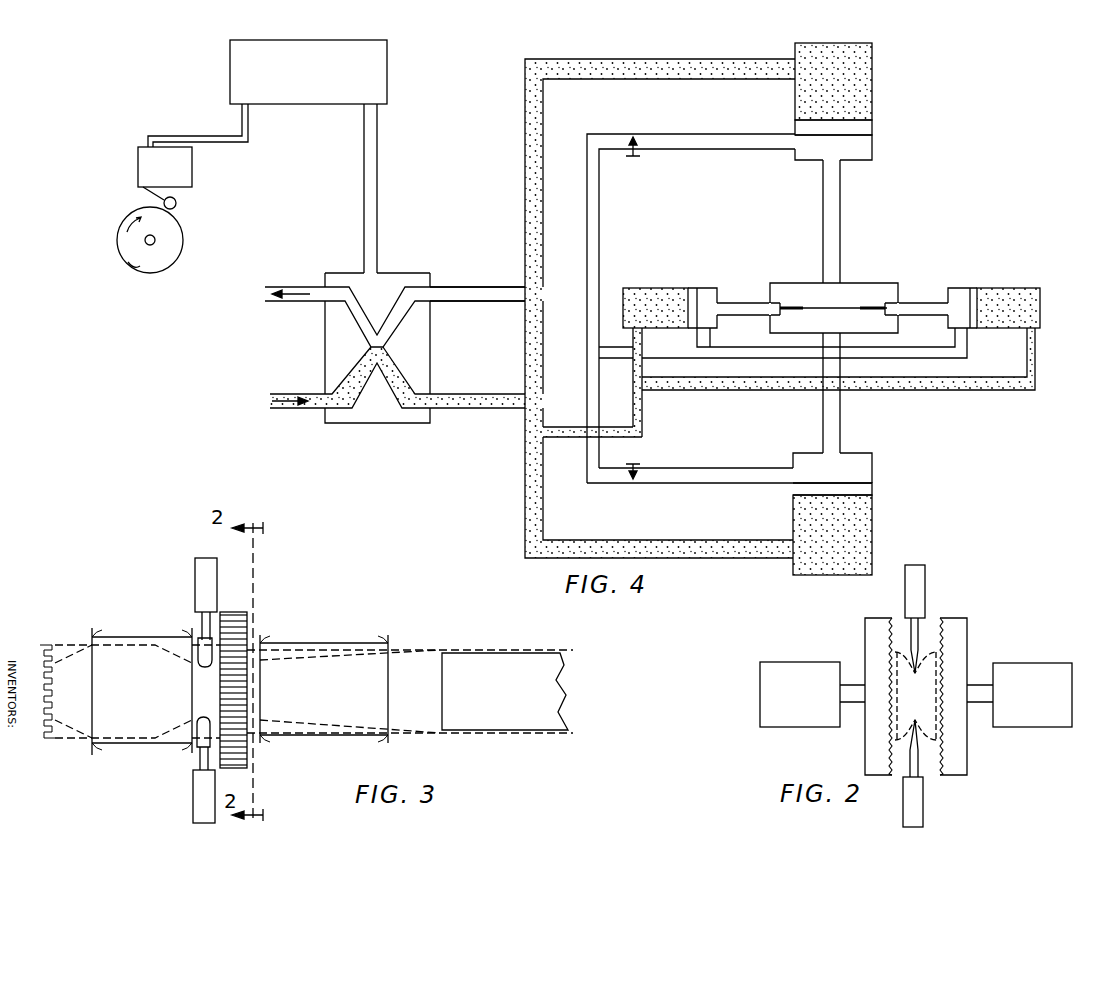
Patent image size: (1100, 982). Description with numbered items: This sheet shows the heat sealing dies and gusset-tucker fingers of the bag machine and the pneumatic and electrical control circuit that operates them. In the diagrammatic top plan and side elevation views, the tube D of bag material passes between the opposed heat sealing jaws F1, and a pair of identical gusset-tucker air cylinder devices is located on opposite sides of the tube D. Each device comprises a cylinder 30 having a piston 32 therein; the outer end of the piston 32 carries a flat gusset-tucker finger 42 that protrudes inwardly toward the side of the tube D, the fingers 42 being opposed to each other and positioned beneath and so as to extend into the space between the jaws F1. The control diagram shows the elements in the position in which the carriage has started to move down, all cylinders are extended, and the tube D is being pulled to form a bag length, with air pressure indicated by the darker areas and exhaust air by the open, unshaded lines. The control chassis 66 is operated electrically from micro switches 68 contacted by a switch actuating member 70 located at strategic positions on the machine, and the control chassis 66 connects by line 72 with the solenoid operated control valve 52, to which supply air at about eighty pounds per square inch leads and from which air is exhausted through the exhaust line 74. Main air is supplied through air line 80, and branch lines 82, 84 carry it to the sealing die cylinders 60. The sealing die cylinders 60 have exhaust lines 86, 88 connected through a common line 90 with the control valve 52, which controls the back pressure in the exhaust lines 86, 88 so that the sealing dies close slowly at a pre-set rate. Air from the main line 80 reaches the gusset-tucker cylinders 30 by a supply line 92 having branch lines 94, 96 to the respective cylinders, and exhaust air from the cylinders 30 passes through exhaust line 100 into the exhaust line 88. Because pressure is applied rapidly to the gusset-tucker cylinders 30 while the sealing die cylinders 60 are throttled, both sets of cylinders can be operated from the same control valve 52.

In FIG. 4, the gusset-tucker cylinder 30 is at (663, 290).
In FIG. 3, the gusset-tucker cylinder 30 is at (195, 586).
In FIG. 2, the gusset-tucker cylinder 30 is at (918, 579).
In FIG. 4, the piston 32 is at (736, 300).
In FIG. 3, the piston 32 is at (198, 634).
In FIG. 2, the piston 32 is at (918, 631).
In FIG. 4, the gusset-tucker finger 42 is at (800, 296).
In FIG. 4, the solenoid operated control valve 52 is at (418, 331).
In FIG. 4, the sealing die cylinder 60 is at (845, 103).
In FIG. 2, the sealing die cylinder 60 is at (772, 712).
In FIG. 4, the control chassis 66 is at (388, 72).
In FIG. 4, the micro switch 68 is at (192, 175).
In FIG. 4, the switch actuating member 70 is at (170, 245).
In FIG. 4, the line 72 is at (377, 170).
In FIG. 4, the exhaust line 74 is at (313, 297).
In FIG. 4, the air line 80 is at (437, 393).
In FIG. 4, the branch line 82 is at (525, 163).
In FIG. 4, the branch line 84 is at (525, 498).
In FIG. 4, the exhaust line 86 is at (723, 141).
In FIG. 4, the exhaust line 88 is at (706, 443).
In FIG. 4, the common line 90 is at (490, 262).
In FIG. 4, the supply line 92 is at (578, 401).
In FIG. 4, the branch line 94 is at (642, 373).
In FIG. 4, the branch line 96 is at (636, 416).
In FIG. 4, the exhaust line 100 is at (756, 331).
In FIG. 4, the heat sealing jaws F1 is at (848, 290).
In FIG. 3, the heat sealing jaws F1 is at (247, 629).
In FIG. 2, the heat sealing jaws F1 is at (872, 751).
In FIG. 3, the tube D is at (460, 652).